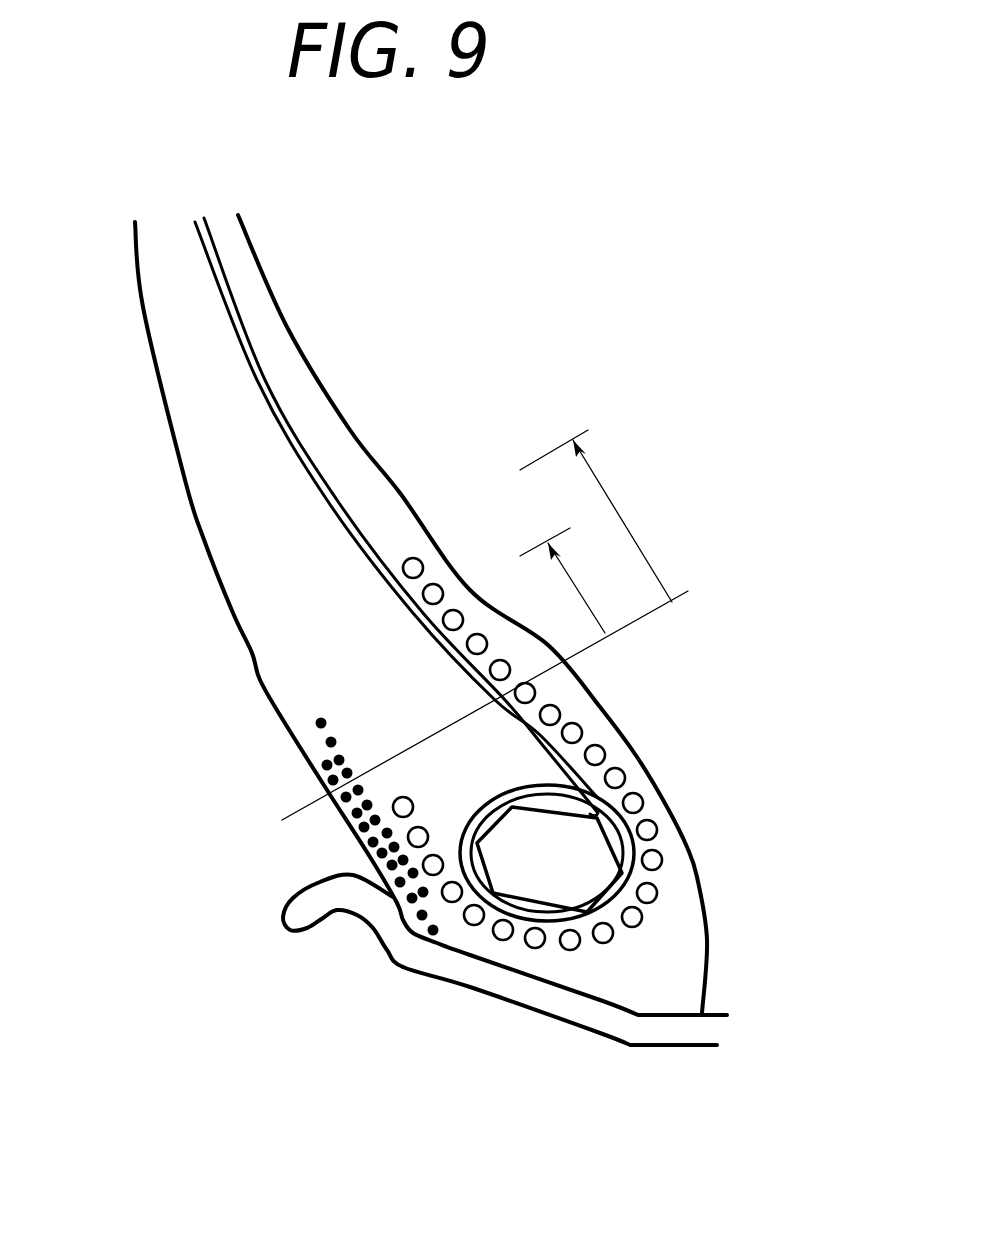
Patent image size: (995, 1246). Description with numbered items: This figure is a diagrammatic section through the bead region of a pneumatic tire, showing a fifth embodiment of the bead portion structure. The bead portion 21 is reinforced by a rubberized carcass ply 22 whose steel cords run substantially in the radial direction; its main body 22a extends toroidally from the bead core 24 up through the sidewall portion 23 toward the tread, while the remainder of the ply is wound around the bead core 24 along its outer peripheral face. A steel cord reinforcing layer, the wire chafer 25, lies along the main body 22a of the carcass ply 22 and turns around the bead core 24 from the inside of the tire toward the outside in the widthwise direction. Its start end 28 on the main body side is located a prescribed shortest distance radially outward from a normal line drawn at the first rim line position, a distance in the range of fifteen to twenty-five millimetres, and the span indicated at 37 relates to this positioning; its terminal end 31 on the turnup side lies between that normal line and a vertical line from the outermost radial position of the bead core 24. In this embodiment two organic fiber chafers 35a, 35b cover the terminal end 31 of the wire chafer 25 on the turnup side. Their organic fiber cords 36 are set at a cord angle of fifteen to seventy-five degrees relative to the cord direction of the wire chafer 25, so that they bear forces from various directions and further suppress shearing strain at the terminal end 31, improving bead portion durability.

The bead portion 21 is at (707, 942).
The carcass ply 22 is at (307, 457).
The main body 22a is at (260, 380).
The sidewall portion 23 is at (143, 307).
The bead core 24 is at (567, 868).
The wire chafer 25 is at (600, 754).
The start end 28 is at (410, 557).
The terminal end 31 is at (395, 805).
The organic fiber chafer 35a is at (388, 855).
The organic fiber chafer 35b is at (407, 907).
The organic fiber cords 36 is at (331, 742).
The hole pitch 37 is at (573, 733).